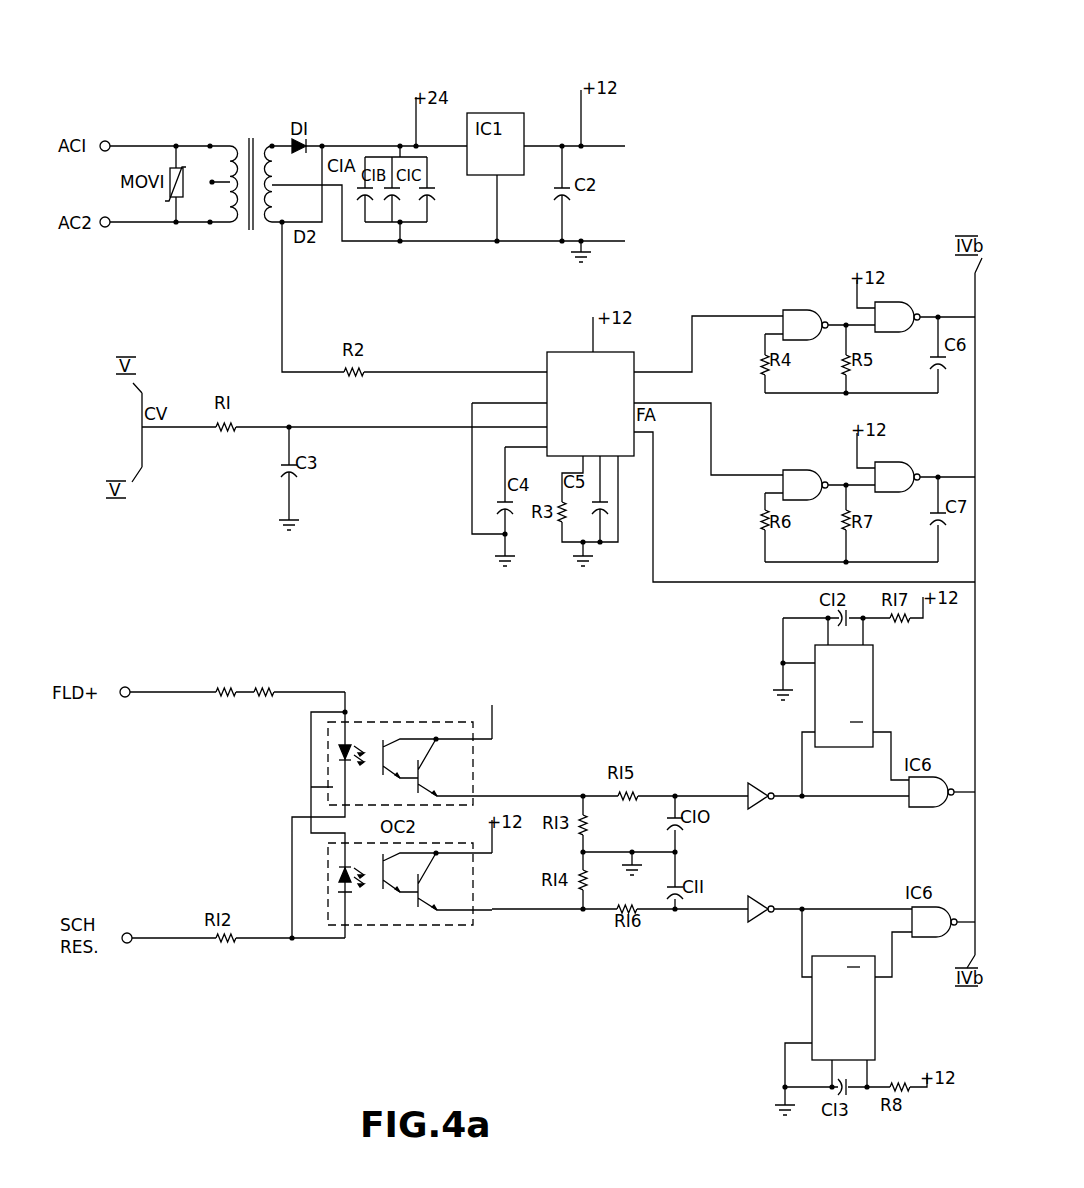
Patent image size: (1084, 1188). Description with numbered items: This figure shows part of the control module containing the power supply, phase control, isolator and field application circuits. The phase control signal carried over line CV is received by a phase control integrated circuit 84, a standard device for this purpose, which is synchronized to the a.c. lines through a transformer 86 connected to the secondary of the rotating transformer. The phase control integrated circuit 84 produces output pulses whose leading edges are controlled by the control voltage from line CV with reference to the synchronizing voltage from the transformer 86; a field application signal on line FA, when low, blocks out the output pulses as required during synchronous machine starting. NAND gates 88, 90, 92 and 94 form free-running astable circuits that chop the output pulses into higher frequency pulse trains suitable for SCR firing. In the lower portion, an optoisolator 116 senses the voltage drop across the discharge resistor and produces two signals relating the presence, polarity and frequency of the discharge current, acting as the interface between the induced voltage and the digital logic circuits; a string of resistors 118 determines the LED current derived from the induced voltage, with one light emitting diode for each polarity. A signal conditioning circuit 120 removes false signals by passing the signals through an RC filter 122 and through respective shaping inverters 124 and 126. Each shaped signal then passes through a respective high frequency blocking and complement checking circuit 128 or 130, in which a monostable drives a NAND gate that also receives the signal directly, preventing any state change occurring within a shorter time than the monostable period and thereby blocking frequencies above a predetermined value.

The phase control integrated circuit 84 is at (611, 353).
The transformer 86 is at (255, 137).
The NAND gate 88 is at (783, 311).
The NAND gate 90 is at (914, 311).
The NAND gate 92 is at (783, 473).
The NAND gate 94 is at (914, 471).
The optoisolator 116 is at (377, 689).
The string of resistors 118 is at (255, 661).
The signal conditioning circuit 120 is at (788, 991).
The RC filter 122 is at (675, 794).
The shaping inverter 124 is at (750, 804).
The shaping inverter 126 is at (751, 922).
The high frequency blocking and complement checking circuit 128 is at (876, 690).
The high frequency blocking and complement checking circuit 130 is at (876, 1013).